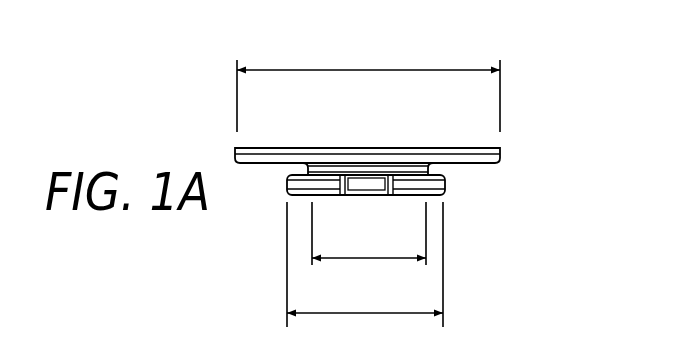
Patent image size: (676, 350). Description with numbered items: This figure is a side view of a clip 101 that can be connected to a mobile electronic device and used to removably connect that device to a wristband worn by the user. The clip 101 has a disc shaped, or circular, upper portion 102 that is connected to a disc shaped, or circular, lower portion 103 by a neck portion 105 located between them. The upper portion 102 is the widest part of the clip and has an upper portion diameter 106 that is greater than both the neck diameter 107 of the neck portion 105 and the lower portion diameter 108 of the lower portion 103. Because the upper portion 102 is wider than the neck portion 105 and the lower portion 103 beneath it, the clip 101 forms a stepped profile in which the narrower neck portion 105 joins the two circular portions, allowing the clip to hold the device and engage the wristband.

The clip 101 is at (393, 163).
The upper portion 102 is at (381, 145).
The lower portion 103 is at (317, 203).
The neck portion 105 is at (446, 171).
The upper portion diameter 106 is at (333, 70).
The neck diameter 107 is at (345, 259).
The lower portion diameter 108 is at (352, 314).